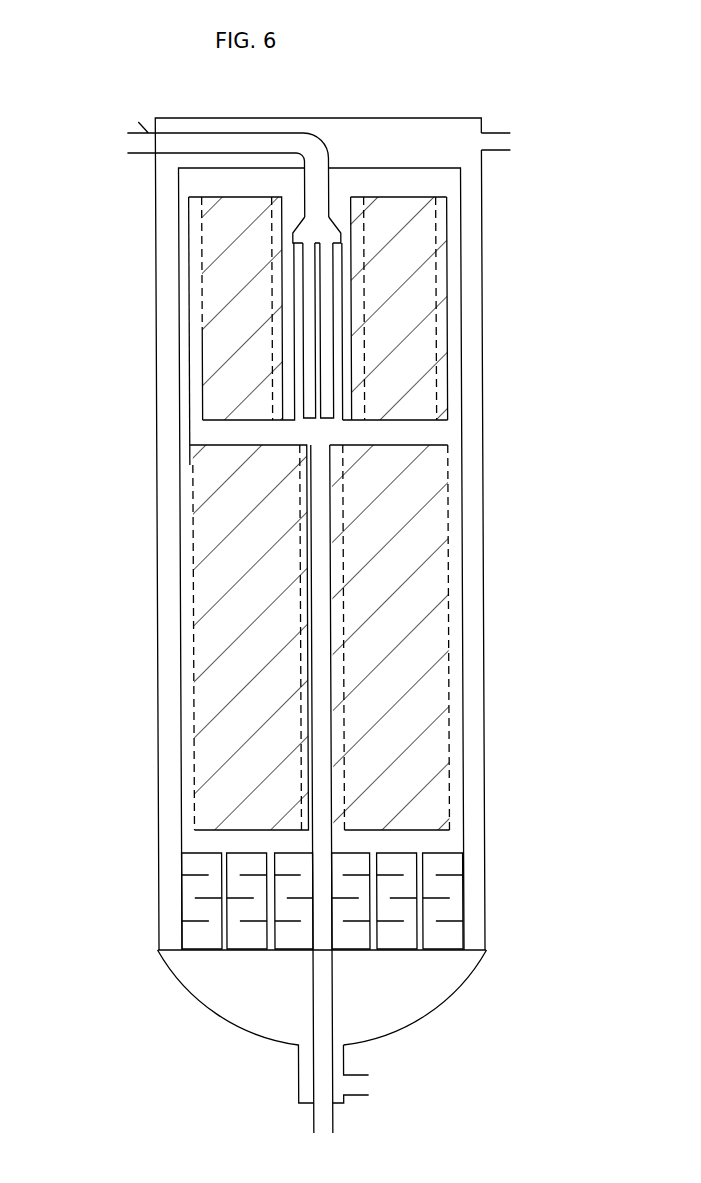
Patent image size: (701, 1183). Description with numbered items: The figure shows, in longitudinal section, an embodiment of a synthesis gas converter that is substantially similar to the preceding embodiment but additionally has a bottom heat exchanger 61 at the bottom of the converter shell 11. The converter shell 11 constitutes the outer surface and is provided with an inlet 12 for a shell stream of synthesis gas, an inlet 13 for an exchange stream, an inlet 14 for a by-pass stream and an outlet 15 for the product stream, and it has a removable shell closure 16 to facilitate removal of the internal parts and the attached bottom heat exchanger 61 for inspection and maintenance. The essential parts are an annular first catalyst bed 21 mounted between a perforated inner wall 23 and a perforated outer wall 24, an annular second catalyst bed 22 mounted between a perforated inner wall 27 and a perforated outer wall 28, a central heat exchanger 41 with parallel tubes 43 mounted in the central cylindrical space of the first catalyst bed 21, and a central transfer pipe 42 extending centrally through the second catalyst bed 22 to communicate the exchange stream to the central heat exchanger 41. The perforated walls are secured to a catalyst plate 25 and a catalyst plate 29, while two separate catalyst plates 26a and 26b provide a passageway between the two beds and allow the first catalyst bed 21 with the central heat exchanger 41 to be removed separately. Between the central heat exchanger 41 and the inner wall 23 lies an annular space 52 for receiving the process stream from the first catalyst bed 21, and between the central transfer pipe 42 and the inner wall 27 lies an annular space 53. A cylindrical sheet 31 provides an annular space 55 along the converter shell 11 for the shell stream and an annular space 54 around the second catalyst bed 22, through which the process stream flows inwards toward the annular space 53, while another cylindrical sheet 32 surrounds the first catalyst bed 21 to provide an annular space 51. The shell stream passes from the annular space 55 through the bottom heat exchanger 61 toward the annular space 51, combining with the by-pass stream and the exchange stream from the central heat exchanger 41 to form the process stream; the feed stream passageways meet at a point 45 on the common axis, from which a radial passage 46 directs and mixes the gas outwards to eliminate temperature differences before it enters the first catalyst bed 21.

The converter shell 11 is at (484, 246).
The inlet for shell stream 12 is at (495, 128).
The inlet for exchange stream 13 is at (140, 122).
The inlet for by-pass stream 14 is at (331, 1118).
The outlet for product stream 15 is at (356, 1068).
The removable shell closure 16 is at (415, 117).
The first catalyst bed 21 is at (243, 250).
The second catalyst bed 22 is at (240, 515).
The inner wall 23 is at (398, 362).
The outer wall 24 is at (438, 385).
The catalyst plate 25 is at (425, 820).
The catalyst plate 26a is at (418, 443).
The catalyst plate 26b is at (420, 415).
The inner wall 27 is at (347, 602).
The outer wall 28 is at (450, 645).
The catalyst plate 29 is at (407, 197).
The cylindrical sheet 31 is at (179, 443).
The cylindrical sheet 32 is at (187, 362).
The central heat exchanger 41 is at (360, 285).
The central transfer pipe 42 is at (318, 547).
The parallel tubes 43 is at (323, 325).
The point 45 is at (320, 429).
The radial passage 46 is at (217, 473).
The annular space 51 is at (198, 323).
The annular space 52 is at (275, 287).
The annular space 53 is at (305, 580).
The annular space 54 is at (191, 633).
The annular space 55 is at (168, 402).
The bottom heat exchanger 61 is at (438, 890).